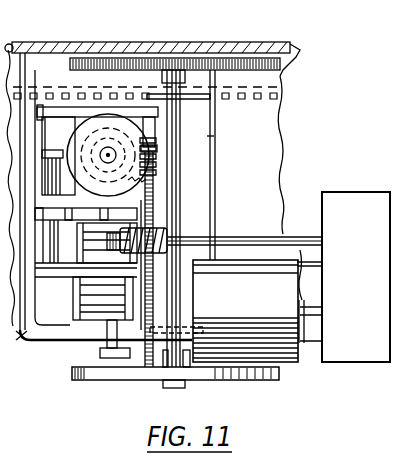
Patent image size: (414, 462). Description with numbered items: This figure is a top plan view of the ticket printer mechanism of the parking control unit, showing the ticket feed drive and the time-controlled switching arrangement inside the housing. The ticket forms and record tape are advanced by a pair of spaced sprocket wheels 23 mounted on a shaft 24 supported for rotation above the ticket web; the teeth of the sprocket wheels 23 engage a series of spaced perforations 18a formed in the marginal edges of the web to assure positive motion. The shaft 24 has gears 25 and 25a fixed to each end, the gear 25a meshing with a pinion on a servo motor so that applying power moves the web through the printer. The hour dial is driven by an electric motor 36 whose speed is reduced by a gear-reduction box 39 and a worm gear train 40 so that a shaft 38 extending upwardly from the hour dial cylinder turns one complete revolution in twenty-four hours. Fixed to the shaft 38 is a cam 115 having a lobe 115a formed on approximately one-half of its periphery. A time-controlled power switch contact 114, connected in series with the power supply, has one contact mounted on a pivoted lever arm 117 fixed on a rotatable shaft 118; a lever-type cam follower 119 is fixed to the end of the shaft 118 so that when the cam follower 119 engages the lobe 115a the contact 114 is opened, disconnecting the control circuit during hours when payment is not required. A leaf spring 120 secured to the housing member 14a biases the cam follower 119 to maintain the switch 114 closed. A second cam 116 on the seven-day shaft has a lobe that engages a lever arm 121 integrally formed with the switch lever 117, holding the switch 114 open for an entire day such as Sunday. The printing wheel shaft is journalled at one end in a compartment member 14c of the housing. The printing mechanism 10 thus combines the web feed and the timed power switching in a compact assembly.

The leaf spring 120 is at (9, 45).
The toothed strip 10 is at (173, 35).
The housing member 14a is at (20, 52).
The cam 115 is at (87, 135).
The lobe 115a is at (108, 150).
The shaft 38 is at (77, 213).
The gear 25a is at (281, 50).
The cam follower 119 is at (55, 150).
The sprocket wheels 23 is at (193, 135).
The shaft 24 is at (173, 145).
The perforations 18a is at (258, 100).
The lever arm 121 is at (157, 160).
The cam 116 is at (157, 187).
The worm gear train 40 is at (157, 223).
The time-controlled power switch contact 114 is at (37, 222).
The pivoted lever arm 117 is at (57, 222).
The rotatable shaft 118 is at (66, 290).
The compartment member 14c is at (22, 342).
The gear 25 is at (229, 381).
The electric motor 36 is at (284, 350).
The gear-reduction box 39 is at (354, 348).